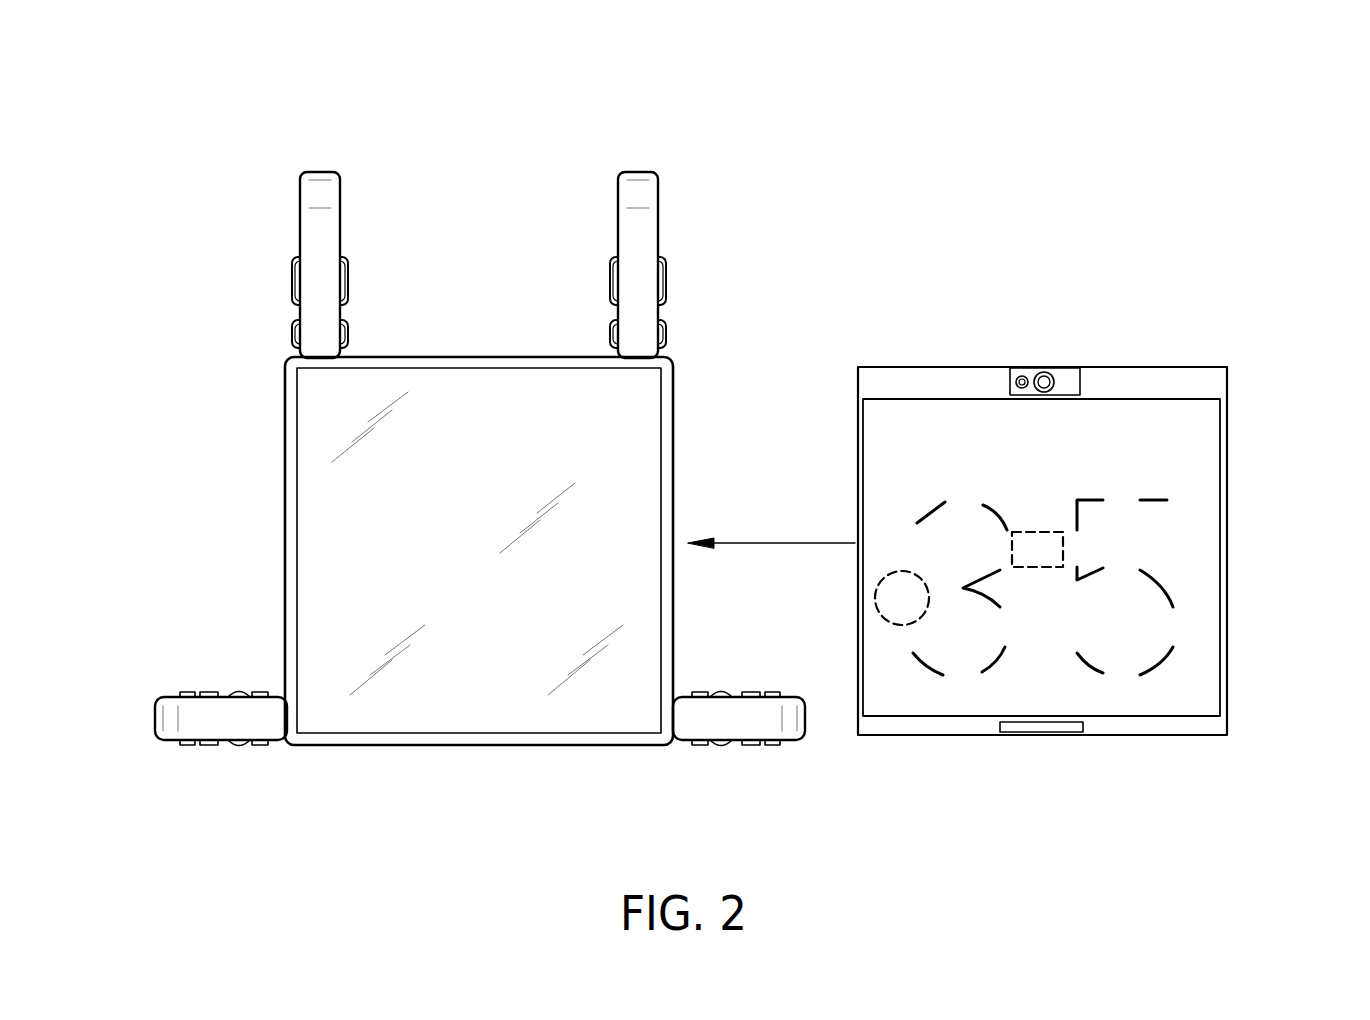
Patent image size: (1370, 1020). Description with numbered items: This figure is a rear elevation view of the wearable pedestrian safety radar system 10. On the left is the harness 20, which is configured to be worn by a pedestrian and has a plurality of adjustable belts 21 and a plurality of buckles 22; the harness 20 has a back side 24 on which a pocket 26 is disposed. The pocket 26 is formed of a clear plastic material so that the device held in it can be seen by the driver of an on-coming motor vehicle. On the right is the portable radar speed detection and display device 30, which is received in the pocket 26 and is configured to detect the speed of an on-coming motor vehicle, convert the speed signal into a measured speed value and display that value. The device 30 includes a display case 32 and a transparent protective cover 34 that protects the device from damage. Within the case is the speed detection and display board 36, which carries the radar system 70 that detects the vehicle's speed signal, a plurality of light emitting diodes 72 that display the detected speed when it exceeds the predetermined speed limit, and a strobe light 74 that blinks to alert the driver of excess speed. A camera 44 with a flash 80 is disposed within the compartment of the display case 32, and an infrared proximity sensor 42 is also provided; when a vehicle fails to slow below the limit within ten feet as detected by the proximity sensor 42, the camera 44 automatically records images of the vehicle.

The wearable pedestrian safety radar system 10 is at (208, 130).
The harness 20 is at (650, 210).
The adjustable belts 21 is at (628, 227).
The buckles 22 is at (205, 746).
The back side 24 is at (305, 197).
The pocket 26 is at (290, 423).
The portable radar speed detection and display device 30 is at (1061, 536).
The display case 32 is at (1208, 380).
The transparent protective cover 34 is at (1222, 560).
The speed detection and display board 36 is at (1203, 448).
The infrared proximity sensor 42 is at (1038, 726).
The camera 44 is at (1071, 384).
The radar system 70 is at (875, 598).
The light emitting diodes 72 is at (1157, 578).
The strobe light 74 is at (1012, 553).
The flash 80 is at (1021, 377).